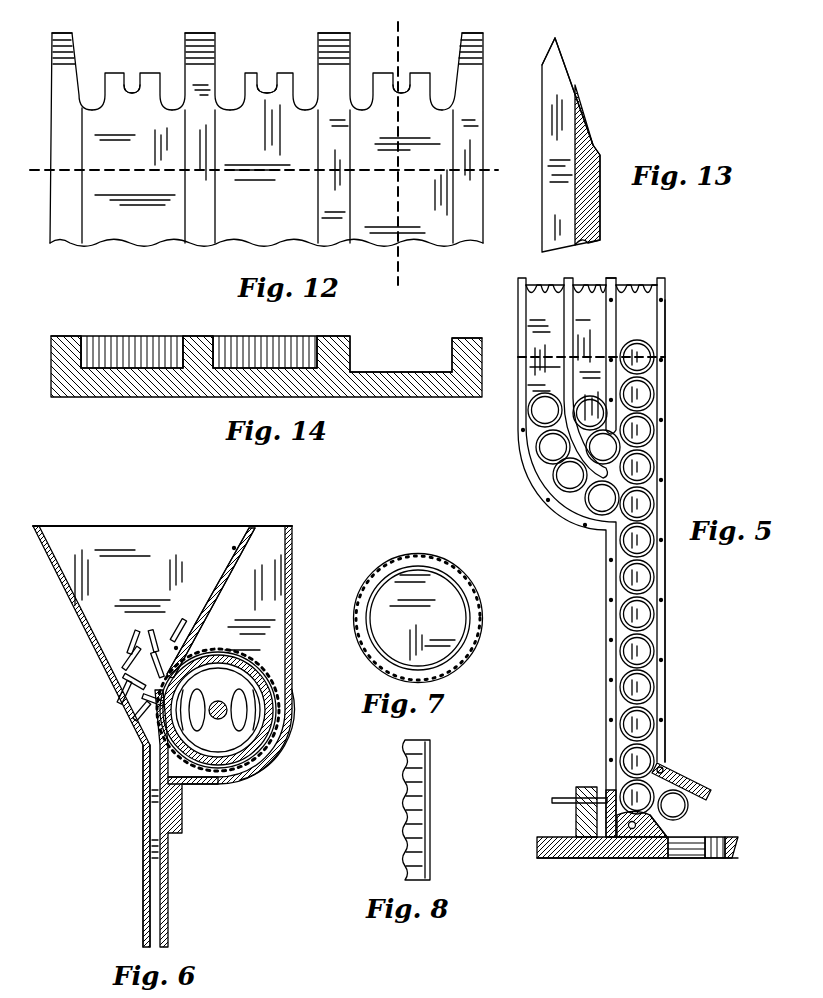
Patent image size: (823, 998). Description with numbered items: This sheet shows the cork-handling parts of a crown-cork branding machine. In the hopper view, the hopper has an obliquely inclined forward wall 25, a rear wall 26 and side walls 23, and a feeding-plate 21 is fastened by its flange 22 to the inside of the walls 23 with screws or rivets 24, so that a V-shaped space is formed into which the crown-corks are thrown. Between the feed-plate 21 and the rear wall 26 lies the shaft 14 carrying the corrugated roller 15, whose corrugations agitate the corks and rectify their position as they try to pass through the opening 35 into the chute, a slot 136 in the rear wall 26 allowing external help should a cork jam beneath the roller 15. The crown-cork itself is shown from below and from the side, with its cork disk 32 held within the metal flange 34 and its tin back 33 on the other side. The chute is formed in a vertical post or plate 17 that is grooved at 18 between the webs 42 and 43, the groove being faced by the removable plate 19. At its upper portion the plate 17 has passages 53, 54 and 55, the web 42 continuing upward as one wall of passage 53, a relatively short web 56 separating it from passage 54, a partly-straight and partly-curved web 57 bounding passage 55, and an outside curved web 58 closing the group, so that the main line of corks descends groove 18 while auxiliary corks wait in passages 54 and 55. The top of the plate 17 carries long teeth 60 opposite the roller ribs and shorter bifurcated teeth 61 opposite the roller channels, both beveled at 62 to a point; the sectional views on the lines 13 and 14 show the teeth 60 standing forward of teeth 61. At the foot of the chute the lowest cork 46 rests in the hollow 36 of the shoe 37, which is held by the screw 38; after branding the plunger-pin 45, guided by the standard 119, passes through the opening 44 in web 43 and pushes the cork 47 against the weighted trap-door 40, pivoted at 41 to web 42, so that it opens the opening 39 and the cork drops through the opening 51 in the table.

In FIG. 12, the belt 13 is at (401, 153).
In FIG. 12, the shaft 14 is at (266, 175).
In FIG. 5, the shaft 14 is at (680, 360).
In FIG. 6, the shaft 14 is at (218, 720).
In FIG. 6, the corrugated roller 15 is at (276, 720).
In FIG. 13, the post or plate 17 is at (578, 215).
In FIG. 14, the post or plate 17 is at (272, 392).
In FIG. 6, the post or plate 17 is at (165, 892).
In FIG. 5, the groove 18 is at (656, 680).
In FIG. 6, the removable plate 19 is at (148, 883).
In FIG. 6, the feeding-plate 21 is at (205, 600).
In FIG. 6, the flange 22 is at (190, 628).
In FIG. 6, the walls 23 is at (118, 550).
In FIG. 6, the screws or rivets 24 is at (230, 545).
In FIG. 6, the forward wall 25 is at (73, 606).
In FIG. 6, the rear wall 26 is at (292, 663).
In FIG. 7, the cork disk 32 is at (418, 618).
In FIG. 8, the tin back 33 is at (428, 834).
In FIG. 8, the metal flange 34 is at (418, 810).
In FIG. 6, the opening 35 is at (134, 715).
In FIG. 5, the hollow or groove 36 is at (628, 860).
In FIG. 5, the shoe 37 is at (564, 860).
In FIG. 5, the screw 38 is at (608, 862).
In FIG. 5, the opening 39 is at (690, 803).
In FIG. 5, the weighted trap-door 40 is at (696, 786).
In FIG. 5, the pivot 41 is at (666, 768).
In FIG. 12, the web 42 is at (462, 138).
In FIG. 14, the web 42 is at (465, 340).
In FIG. 5, the web 42 is at (661, 345).
In FIG. 5, the web 43 is at (606, 680).
In FIG. 6, the web 43 is at (166, 862).
In FIG. 5, the opening 44 is at (606, 795).
In FIG. 5, the plunger-pin 45 is at (551, 800).
In FIG. 5, the cork 46 is at (660, 860).
In FIG. 5, the cork 47 is at (684, 860).
In FIG. 5, the opening 51 is at (712, 850).
In FIG. 12, the passage 53 is at (404, 153).
In FIG. 14, the passage 53 is at (401, 360).
In FIG. 5, the passage 53 is at (633, 298).
In FIG. 12, the passage 54 is at (265, 154).
In FIG. 14, the passage 54 is at (266, 340).
In FIG. 5, the passage 54 is at (585, 298).
In FIG. 12, the passage 55 is at (133, 154).
In FIG. 14, the passage 55 is at (140, 340).
In FIG. 5, the passage 55 is at (543, 298).
In FIG. 12, the short web 56 is at (333, 139).
In FIG. 14, the short web 56 is at (332, 340).
In FIG. 5, the short web 56 is at (612, 282).
In FIG. 12, the partly-straight and partly-curved web 57 is at (201, 138).
In FIG. 14, the partly-straight and partly-curved web 57 is at (194, 340).
In FIG. 5, the partly-straight and partly-curved web 57 is at (568, 366).
In FIG. 12, the outside curved web 58 is at (71, 138).
In FIG. 14, the outside curved web 58 is at (66, 342).
In FIG. 5, the outside curved web 58 is at (534, 472).
In FIG. 12, the long teeth 60 is at (70, 33).
In FIG. 13, the long teeth 60 is at (562, 72).
In FIG. 12, the bifurcated teeth 61 is at (124, 73).
In FIG. 13, the bifurcated teeth 61 is at (584, 108).
In FIG. 12, the teeth / bevel 62 is at (52, 40).
In FIG. 13, the teeth / bevel 62 is at (544, 58).
In FIG. 5, the standard 119 is at (576, 816).
In FIG. 6, the slot 136 is at (268, 772).